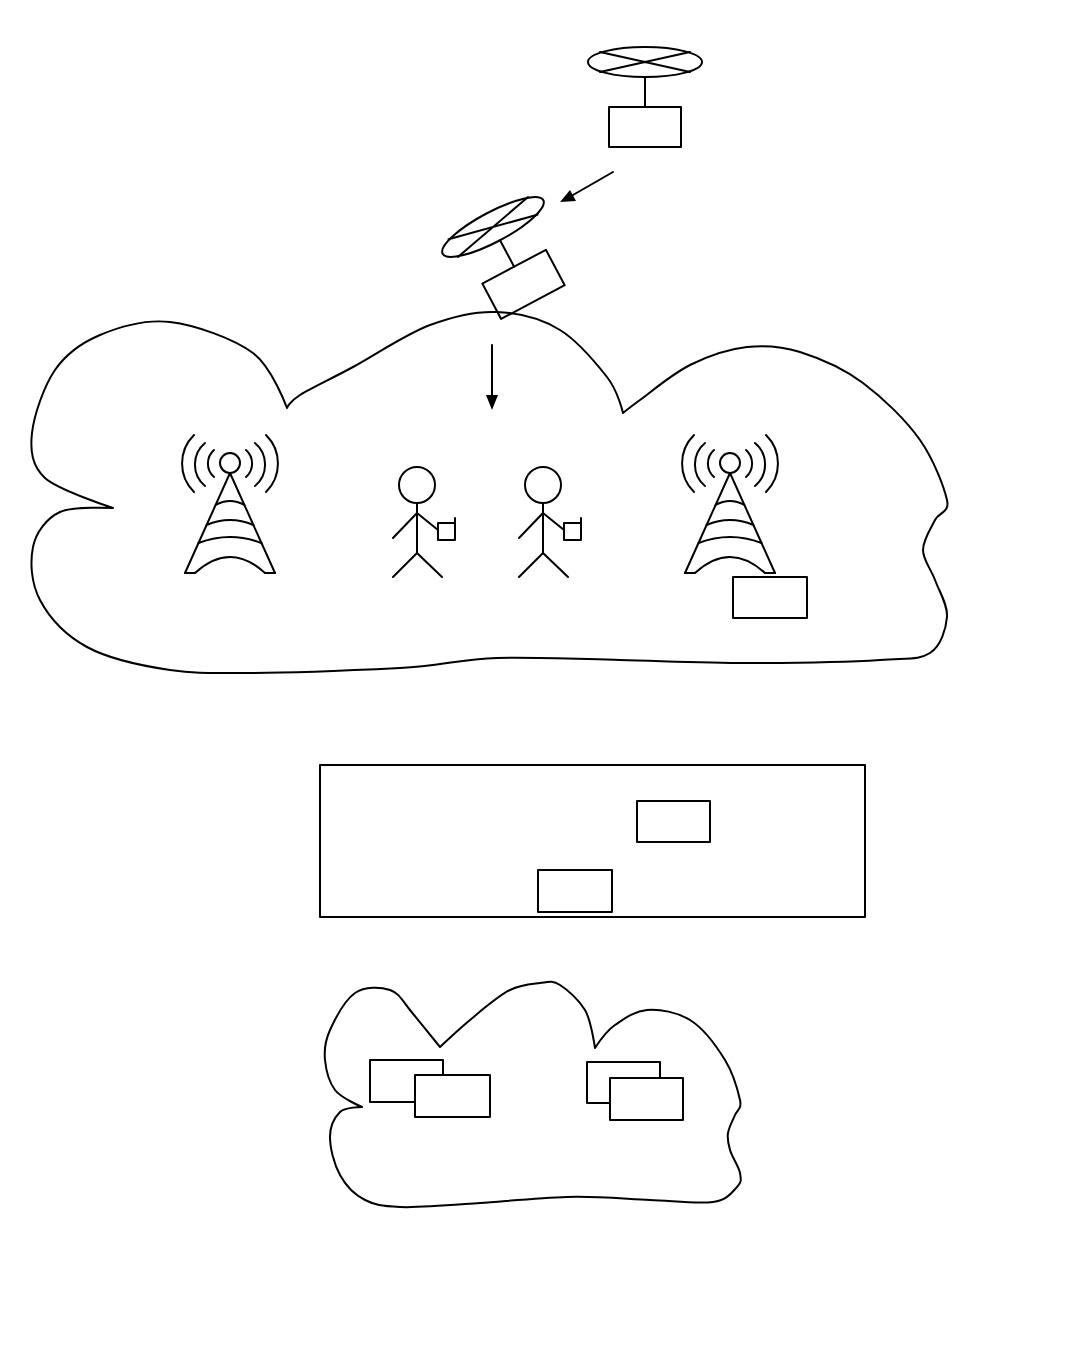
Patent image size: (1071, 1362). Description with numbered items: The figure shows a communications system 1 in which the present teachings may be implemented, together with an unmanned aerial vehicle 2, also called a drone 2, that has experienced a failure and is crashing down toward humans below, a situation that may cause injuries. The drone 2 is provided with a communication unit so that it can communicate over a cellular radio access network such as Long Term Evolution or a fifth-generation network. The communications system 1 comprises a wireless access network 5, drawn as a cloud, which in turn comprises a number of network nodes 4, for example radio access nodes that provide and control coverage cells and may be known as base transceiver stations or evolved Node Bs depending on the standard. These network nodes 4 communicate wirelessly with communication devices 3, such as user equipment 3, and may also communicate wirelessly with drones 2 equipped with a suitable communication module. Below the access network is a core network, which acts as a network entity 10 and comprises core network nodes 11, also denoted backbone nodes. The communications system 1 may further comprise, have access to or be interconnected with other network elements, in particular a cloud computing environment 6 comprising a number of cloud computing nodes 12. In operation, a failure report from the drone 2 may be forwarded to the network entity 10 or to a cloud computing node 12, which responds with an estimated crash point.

The communications system 1 is at (375, 147).
The unmanned aerial vehicle 2 is at (682, 132).
The communication device 3 is at (583, 542).
The network node 4 is at (807, 593).
The wireless access network 5 is at (489, 555).
The cloud computing environment 6 is at (539, 1126).
The network entity 10 is at (633, 841).
The core network node 11 is at (588, 905).
The cloud computing node 12 is at (462, 1103).